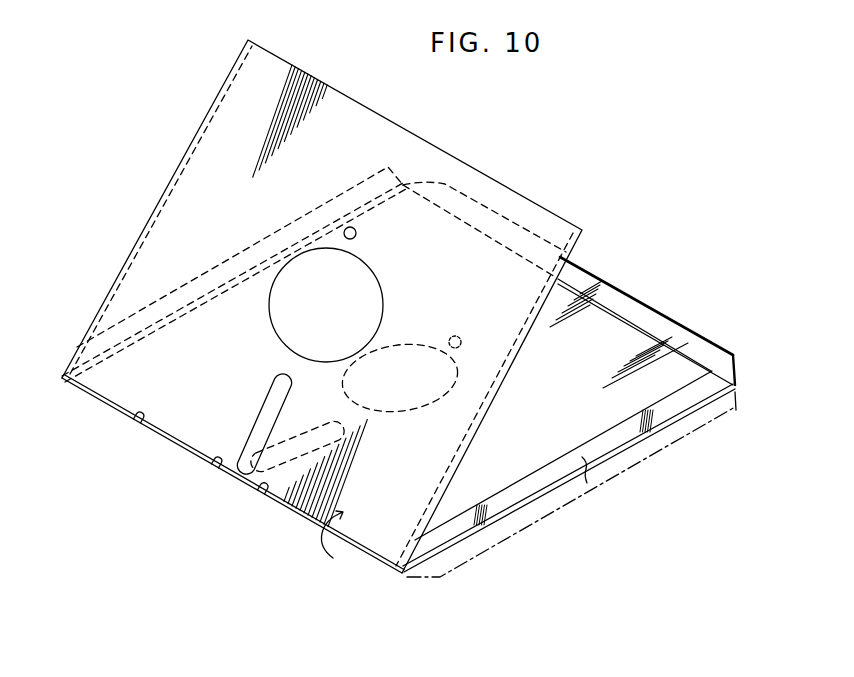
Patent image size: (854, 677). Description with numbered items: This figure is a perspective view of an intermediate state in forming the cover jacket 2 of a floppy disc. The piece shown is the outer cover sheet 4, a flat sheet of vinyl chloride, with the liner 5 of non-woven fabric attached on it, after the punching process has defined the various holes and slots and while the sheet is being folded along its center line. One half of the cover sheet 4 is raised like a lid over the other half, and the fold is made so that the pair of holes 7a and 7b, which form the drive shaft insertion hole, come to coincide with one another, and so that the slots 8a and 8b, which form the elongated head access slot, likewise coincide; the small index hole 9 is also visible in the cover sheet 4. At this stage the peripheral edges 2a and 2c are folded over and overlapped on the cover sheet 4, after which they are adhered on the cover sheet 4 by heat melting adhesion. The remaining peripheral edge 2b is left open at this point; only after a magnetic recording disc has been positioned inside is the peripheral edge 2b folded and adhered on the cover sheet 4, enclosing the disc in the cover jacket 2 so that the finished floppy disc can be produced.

The cover jacket 2 is at (661, 303).
The peripheral edge 2a is at (133, 317).
The peripheral edge 2b is at (592, 278).
The peripheral edge 2c is at (533, 513).
The outer cover sheet 4 is at (372, 543).
The liner 5 is at (657, 384).
The hole 7a is at (315, 253).
The hole 7b is at (407, 346).
The slot 8a is at (252, 443).
The slot 8b is at (290, 440).
The index hole 9 is at (356, 230).